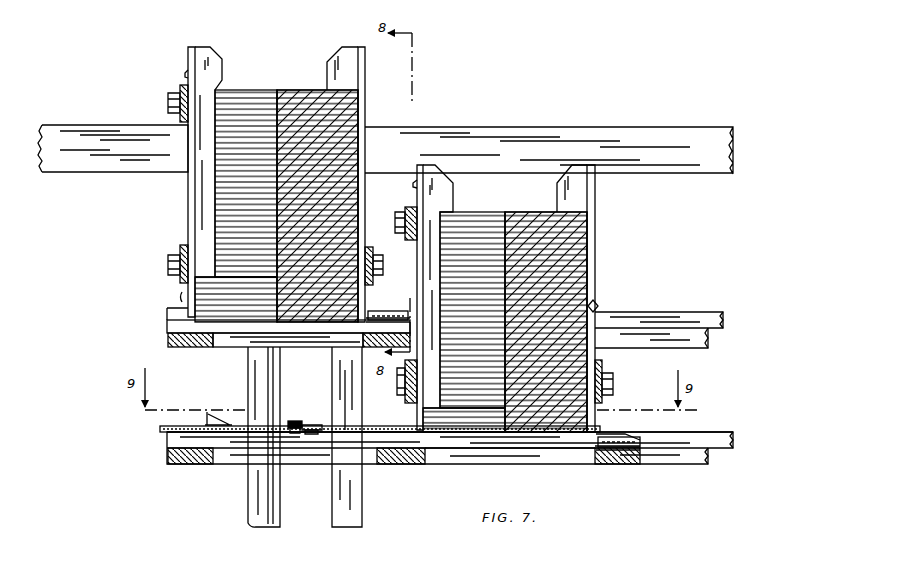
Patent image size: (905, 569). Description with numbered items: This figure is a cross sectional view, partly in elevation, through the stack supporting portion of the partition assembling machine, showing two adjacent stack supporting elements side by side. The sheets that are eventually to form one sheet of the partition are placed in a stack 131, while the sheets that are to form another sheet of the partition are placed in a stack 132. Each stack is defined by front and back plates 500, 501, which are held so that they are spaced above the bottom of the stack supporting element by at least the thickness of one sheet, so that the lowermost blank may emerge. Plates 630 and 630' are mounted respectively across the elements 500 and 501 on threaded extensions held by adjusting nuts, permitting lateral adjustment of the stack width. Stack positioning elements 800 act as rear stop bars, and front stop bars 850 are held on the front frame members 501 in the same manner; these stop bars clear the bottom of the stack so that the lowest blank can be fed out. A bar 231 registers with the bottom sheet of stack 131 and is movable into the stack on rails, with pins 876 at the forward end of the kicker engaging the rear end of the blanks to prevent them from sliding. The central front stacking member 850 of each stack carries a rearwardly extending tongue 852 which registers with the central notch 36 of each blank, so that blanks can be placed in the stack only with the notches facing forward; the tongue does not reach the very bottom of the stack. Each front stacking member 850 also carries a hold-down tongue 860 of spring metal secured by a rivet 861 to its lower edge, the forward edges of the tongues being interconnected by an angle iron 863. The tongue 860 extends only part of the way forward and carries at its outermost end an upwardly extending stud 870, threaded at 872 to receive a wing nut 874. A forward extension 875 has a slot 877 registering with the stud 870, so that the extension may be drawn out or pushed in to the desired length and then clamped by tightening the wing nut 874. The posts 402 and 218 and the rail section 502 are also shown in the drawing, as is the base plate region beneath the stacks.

The central notch 36 is at (200, 325).
The stack 131 is at (269, 89).
The stack 132 is at (468, 211).
The post 218 is at (352, 523).
The bar 231 is at (402, 301).
The post 402 is at (280, 513).
The front plate 500 is at (363, 83).
The back plate 501 is at (188, 58).
The rail section 502 is at (530, 438).
The plate 630 is at (400, 248).
The plate 630' is at (159, 251).
The stack positioning element 800 is at (366, 226).
The front stop bar 850 is at (188, 182).
The tongue 852 is at (205, 92).
The hold-down tongue 860 is at (283, 433).
The rivet 861 is at (415, 421).
The angle iron 863 is at (208, 418).
The stud 870 is at (297, 433).
The threaded portion 872 is at (297, 423).
The wing nut 874 is at (320, 401).
The forward extension 875 is at (176, 427).
The pin 876 is at (367, 320).
The slot 877 is at (310, 434).